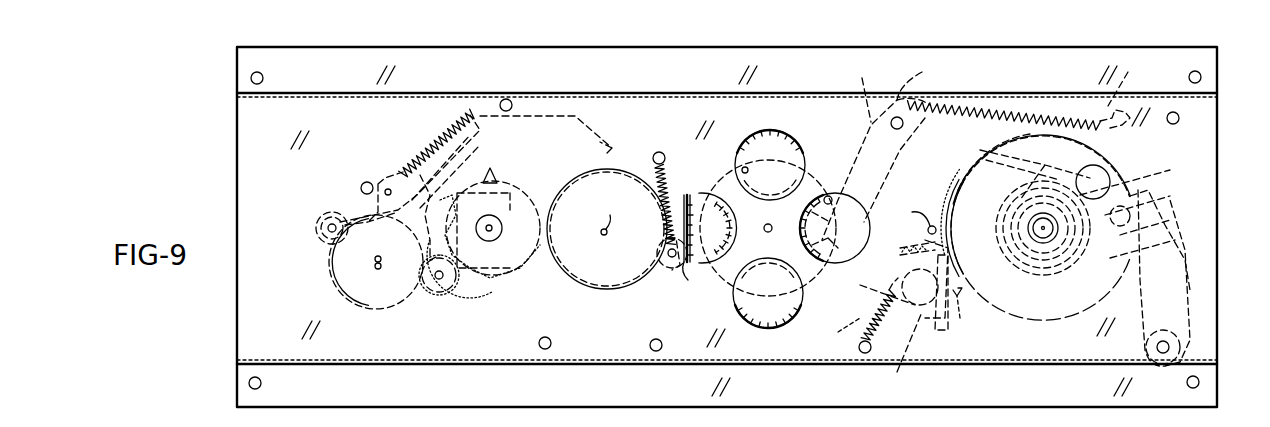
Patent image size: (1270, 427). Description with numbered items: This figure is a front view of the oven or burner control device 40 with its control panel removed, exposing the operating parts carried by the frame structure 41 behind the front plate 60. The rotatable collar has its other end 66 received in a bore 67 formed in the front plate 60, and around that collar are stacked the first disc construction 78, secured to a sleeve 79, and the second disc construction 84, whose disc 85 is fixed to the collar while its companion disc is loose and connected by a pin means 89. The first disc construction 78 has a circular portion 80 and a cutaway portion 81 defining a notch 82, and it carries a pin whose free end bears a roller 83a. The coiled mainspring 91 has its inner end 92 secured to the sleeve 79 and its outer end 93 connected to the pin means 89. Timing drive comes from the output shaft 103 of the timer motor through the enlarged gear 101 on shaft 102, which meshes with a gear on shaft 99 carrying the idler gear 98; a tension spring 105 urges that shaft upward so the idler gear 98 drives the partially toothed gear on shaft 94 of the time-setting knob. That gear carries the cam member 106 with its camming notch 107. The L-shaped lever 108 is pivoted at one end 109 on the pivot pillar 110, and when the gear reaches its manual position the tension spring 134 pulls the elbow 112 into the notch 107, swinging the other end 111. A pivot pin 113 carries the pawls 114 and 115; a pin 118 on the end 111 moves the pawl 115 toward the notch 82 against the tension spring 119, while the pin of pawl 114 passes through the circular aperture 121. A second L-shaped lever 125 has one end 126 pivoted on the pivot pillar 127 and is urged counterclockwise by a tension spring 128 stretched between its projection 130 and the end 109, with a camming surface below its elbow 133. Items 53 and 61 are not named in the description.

The control device 40 is at (194, 71).
The frame structure 41 is at (242, 123).
The front plate 60 is at (243, 174).
The manual dial 53 is at (800, 165).
The mounting holes 61 is at (550, 339).
The other end of the collar 66 is at (1043, 243).
The bore 67 is at (1040, 240).
The first disc construction 78 is at (1155, 278).
The sleeve 79 is at (999, 240).
The circular portion 80 is at (1064, 322).
The cutaway portion 81 is at (996, 152).
The notch 82 is at (965, 310).
The roller 83a is at (1139, 177).
The second disc construction 84 is at (942, 196).
The disc 85 is at (966, 176).
The pin means 89 is at (1150, 200).
The mainspring 91 is at (1075, 258).
The inner end 92 is at (1030, 190).
The outer end 93 is at (1152, 220).
The shaft 94 is at (768, 232).
The idler gear 98 is at (672, 270).
The shaft 99 is at (692, 270).
The enlarged gear 101 is at (607, 282).
The shaft 102 is at (602, 215).
The output shaft 103 is at (489, 232).
The tension spring 105 is at (668, 176).
The cam member 106 is at (795, 302).
The camming notch 107 is at (826, 274).
The L-shaped lever 108 is at (860, 90).
The one end of the lever 109 is at (884, 149).
The pivot pillar 110 is at (904, 124).
The other end of the lever 111 is at (901, 351).
The elbow 112 is at (835, 200).
The pivot pin 113 is at (906, 215).
The pawl 114 is at (940, 322).
The pawl 115 is at (928, 230).
The pin 118 is at (913, 276).
The tension spring 119 is at (903, 249).
The circular aperture 121 is at (887, 315).
The L-shaped lever 125 is at (1165, 152).
The one end of the lever 126 is at (1193, 306).
The pivot pillar 127 is at (1168, 346).
The tension spring 128 is at (1003, 96).
The projection 130 is at (1132, 82).
The elbow 133 is at (1110, 178).
The tension spring 134 is at (834, 333).